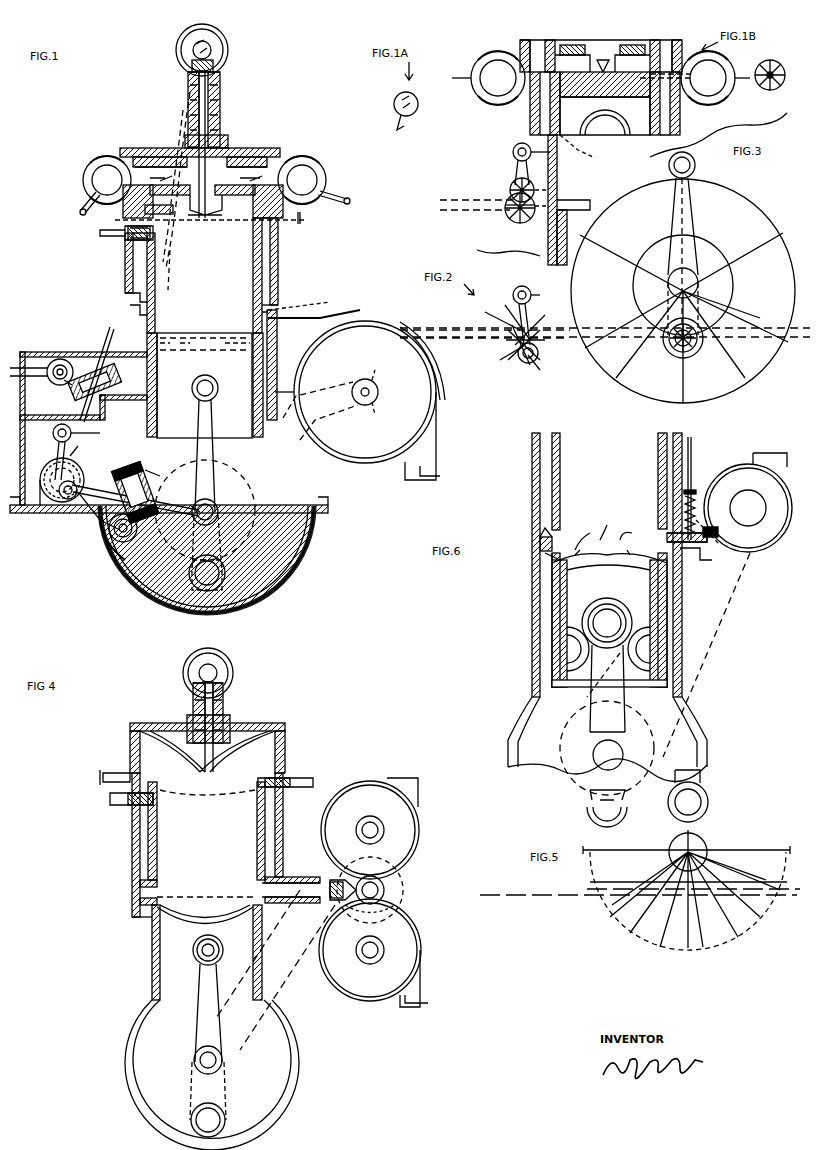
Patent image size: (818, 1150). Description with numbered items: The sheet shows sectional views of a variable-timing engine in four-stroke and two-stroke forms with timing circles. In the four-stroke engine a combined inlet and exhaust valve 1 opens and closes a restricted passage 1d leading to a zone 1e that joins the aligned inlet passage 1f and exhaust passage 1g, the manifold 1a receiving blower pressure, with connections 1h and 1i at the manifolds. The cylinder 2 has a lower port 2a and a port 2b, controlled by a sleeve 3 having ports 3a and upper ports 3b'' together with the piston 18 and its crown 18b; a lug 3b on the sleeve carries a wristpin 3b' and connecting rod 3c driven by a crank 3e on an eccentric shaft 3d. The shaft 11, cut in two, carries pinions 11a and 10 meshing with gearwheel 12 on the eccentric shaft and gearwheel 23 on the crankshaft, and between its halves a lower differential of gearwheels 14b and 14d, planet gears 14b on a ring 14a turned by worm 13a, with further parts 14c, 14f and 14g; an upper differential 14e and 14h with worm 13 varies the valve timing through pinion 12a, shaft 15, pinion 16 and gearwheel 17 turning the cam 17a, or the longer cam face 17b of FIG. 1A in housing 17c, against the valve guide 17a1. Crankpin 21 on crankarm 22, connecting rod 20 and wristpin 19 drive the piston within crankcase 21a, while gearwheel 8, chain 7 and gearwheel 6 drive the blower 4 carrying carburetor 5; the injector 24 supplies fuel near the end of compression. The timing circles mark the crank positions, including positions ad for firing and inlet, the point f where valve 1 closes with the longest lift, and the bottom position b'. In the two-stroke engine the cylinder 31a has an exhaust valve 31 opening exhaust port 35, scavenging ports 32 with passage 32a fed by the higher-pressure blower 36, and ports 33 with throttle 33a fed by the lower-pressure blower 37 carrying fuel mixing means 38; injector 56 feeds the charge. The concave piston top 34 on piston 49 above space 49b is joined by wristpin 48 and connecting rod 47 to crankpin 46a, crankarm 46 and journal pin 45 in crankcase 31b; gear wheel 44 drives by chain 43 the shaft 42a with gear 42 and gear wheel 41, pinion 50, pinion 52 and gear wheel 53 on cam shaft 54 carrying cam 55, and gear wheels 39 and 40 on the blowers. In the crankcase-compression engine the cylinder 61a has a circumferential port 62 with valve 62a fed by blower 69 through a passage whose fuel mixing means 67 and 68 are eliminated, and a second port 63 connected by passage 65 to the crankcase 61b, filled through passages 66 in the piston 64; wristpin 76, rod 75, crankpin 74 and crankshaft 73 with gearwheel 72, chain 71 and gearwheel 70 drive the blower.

In FIG. 1, the combined inlet and exhaust valve 1 is at (200, 180).
In FIG. 1, the manifold 1a is at (87, 160).
In FIG. 1B, the manifold 1a is at (498, 78).
In FIG. 1, the valve passage 1d is at (215, 220).
In FIG. 1, the zone 1e is at (228, 150).
In FIG. 1, the inlet passage 1f is at (157, 157).
In FIG. 1, the exhaust passage 1g is at (280, 151).
In FIG. 1, the inlet pipe 1h is at (80, 198).
In FIG. 1B, the inlet pipe 1h is at (461, 71).
In FIG. 1, the exhaust manifold torus 1i is at (330, 180).
In FIG. 1B, the exhaust manifold torus 1i is at (715, 100).
In FIG. 1, the cylinder 2 is at (280, 278).
In FIG. 1B, the cylinder 2 is at (530, 129).
In FIG. 1, the cylinder port 2a is at (158, 333).
In FIG. 1B, the cylinder port 2a is at (437, 204).
In FIG. 2, the cylinder port 2a is at (455, 333).
In FIG. 1, the port 2b is at (142, 322).
In FIG. 1, the sleeve 3 is at (280, 303).
In FIG. 1B, the sleeve 3 is at (570, 159).
In FIG. 1, the sleeve ports 3a is at (200, 350).
In FIG. 1B, the sleeve ports 3a is at (565, 200).
In FIG. 1B, the lug 3b is at (569, 200).
In FIG. 2, the lug 3b is at (544, 286).
In FIG. 1B, the wristpin 3b' is at (515, 149).
In FIG. 1B, the upper sleeve ports 3b'' is at (609, 45).
In FIG. 2, the connecting rod 3c is at (522, 286).
In FIG. 1, the eccentric shaft 3d is at (45, 505).
In FIG. 1B, the eccentric shaft 3d is at (505, 213).
In FIG. 2, the eccentric shaft 3d is at (508, 360).
In FIG. 1, the crank 3e is at (68, 500).
In FIG. 1B, the crank 3e is at (510, 185).
In FIG. 2, the crank 3e is at (540, 360).
In FIG. 1, the blower 4 is at (436, 380).
In FIG. 2, the blower 4 is at (438, 368).
In FIG. 1, the carburetor 5 is at (440, 462).
In FIG. 1, the gearwheel 6 is at (355, 398).
In FIG. 1, the chain 7 is at (328, 456).
In FIG. 1, the gearwheel 8 is at (248, 480).
In FIG. 1, the pinion 10 is at (190, 512).
In FIG. 1, the shaft 11 is at (100, 490).
In FIG. 1, the pinion 11a is at (85, 498).
In FIG. 1, the gearwheel 12 is at (82, 466).
In FIG. 1, the pinion 12a is at (82, 449).
In FIG. 1, the worm 13 is at (15, 365).
In FIG. 1, the worm 13a is at (132, 538).
In FIG. 1, the ring 14a is at (145, 468).
In FIG. 1, the differential gearwheels 14b is at (136, 467).
In FIG. 1, the slider guide 14c is at (161, 473).
In FIG. 1, the gearwheel 14d is at (104, 545).
In FIG. 1, the upper differential gear 14e is at (58, 385).
In FIG. 1, the upper differential gear 14f is at (115, 380).
In FIG. 1, the upper differential gear 14g is at (66, 392).
In FIG. 1, the upper differential 14h is at (160, 220).
In FIG. 1, the shaft 15 is at (176, 119).
In FIG. 1, the pinion 16 is at (220, 26).
In FIG. 1B, the pinion 16 is at (677, 70).
In FIG. 1, the gearwheel 17 is at (230, 47).
In FIG. 1, the cam 17a is at (214, 53).
In FIG. 1A, the cam 17a is at (409, 129).
In FIG. 1, the valve guide 17a1 is at (217, 72).
In FIG. 1A, the longer cam face 17b is at (418, 105).
In FIG. 1B, the longer cam face 17b is at (446, 107).
In FIG. 1, the valve stem housing 17c is at (220, 107).
In FIG. 1, the piston 18 is at (226, 345).
In FIG. 1B, the piston 18 is at (568, 205).
In FIG. 1, the piston crown 18b is at (175, 270).
In FIG. 1B, the piston crown 18b is at (605, 89).
In FIG. 1, the wristpin 19 is at (218, 388).
In FIG. 1B, the wristpin 19 is at (605, 123).
In FIG. 3, the wristpin 19 is at (695, 162).
In FIG. 1, the connecting rod 20 is at (213, 430).
In FIG. 1B, the connecting rod 20 is at (630, 135).
In FIG. 3, the connecting rod 20 is at (690, 205).
In FIG. 1, the crankpin 21 is at (226, 572).
In FIG. 3, the crankpin 21 is at (683, 345).
In FIG. 1, the crankcase 21a is at (306, 560).
In FIG. 1, the crankarm 22 is at (224, 524).
In FIG. 1, the crankshaft gearwheel 23 is at (218, 511).
In FIG. 3, the crankshaft gearwheel 23 is at (690, 272).
In FIG. 1, the injector 24 is at (112, 238).
In FIG. 1B, the injector 24 is at (604, 48).
In FIG. 4, the exhaust valve 31 is at (214, 760).
In FIG. 4, the cylinder 31a is at (132, 843).
In FIG. 4, the crankcase 31b is at (124, 1047).
In FIG. 5, the scavenging ports 32 is at (530, 889).
In FIG. 4, the scavenging ports 32 is at (138, 884).
In FIG. 4, the inlet port passage 32a is at (282, 877).
In FIG. 5, the ports 33 is at (527, 897).
In FIG. 4, the ports 33 is at (138, 902).
In FIG. 4, the throttle 33a is at (291, 904).
In FIG. 4, the piston top 34 is at (205, 897).
In FIG. 4, the exhaust port 35 is at (132, 745).
In FIG. 4, the blower 36 is at (420, 832).
In FIG. 4, the blower 37 is at (418, 932).
In FIG. 4, the fuel mixing means 38 is at (425, 995).
In FIG. 4, the gear wheel 39 is at (386, 822).
In FIG. 4, the gear wheel 40 is at (386, 950).
In FIG. 4, the gear wheel 41 is at (386, 890).
In FIG. 4, the gear pitch circle 42 is at (400, 872).
In FIG. 4, the shaft 42a is at (400, 905).
In FIG. 4, the chain 43 is at (296, 985).
In FIG. 4, the gear wheel 44 is at (223, 1058).
In FIG. 4, the journal pin 45 is at (200, 1062).
In FIG. 4, the crankarm 46 is at (228, 1081).
In FIG. 6, the crankpin 46a is at (695, 796).
In FIG. 4, the crankpin 46a is at (226, 1118).
In FIG. 4, the connecting rod 47 is at (196, 1012).
In FIG. 1B, the wristpin 48 is at (605, 101).
In FIG. 4, the wristpin 48 is at (223, 948).
In FIG. 4, the piston 49 is at (188, 920).
In FIG. 4, the combustion chamber 49b is at (207, 797).
In FIG. 4, the pinion 50 is at (360, 878).
In FIG. 4, the pinion 52 is at (224, 690).
In FIG. 4, the gear wheel 53 is at (233, 665).
In FIG. 4, the cam shaft 54 is at (199, 673).
In FIG. 4, the cam 55 is at (200, 684).
In FIG. 4, the fuel injector 56 is at (292, 778).
In FIG. 6, the cylinder 61a is at (532, 476).
In FIG. 6, the crankcase 61b is at (512, 733).
In FIG. 6, the circumferential port 62 is at (536, 540).
In FIG. 6, the port valve 62a is at (725, 532).
In FIG. 6, the second circumferential port 63 is at (540, 556).
In FIG. 6, the piston 64 is at (607, 552).
In FIG. 6, the passage 65 is at (540, 600).
In FIG. 6, the piston passages 66 is at (556, 655).
In FIG. 6, the fuel mixing means 67 is at (701, 561).
In FIG. 6, the fuel mixing means 68 is at (696, 485).
In FIG. 6, the blower 69 is at (733, 463).
In FIG. 6, the blower gearwheel 70 is at (762, 500).
In FIG. 6, the chain 71 is at (745, 576).
In FIG. 6, the gearwheel 72 is at (645, 728).
In FIG. 6, the crankshaft 73 is at (624, 750).
In FIG. 6, the crankpin 74 is at (587, 808).
In FIG. 6, the connecting rod 75 is at (628, 703).
In FIG. 6, the wristpin 76 is at (613, 615).
In FIG. 3, the crank positions a and d ad is at (690, 170).
In FIG. 1B, the crank position f is at (769, 82).
In FIG. 1B, the bottom position b' is at (538, 201).